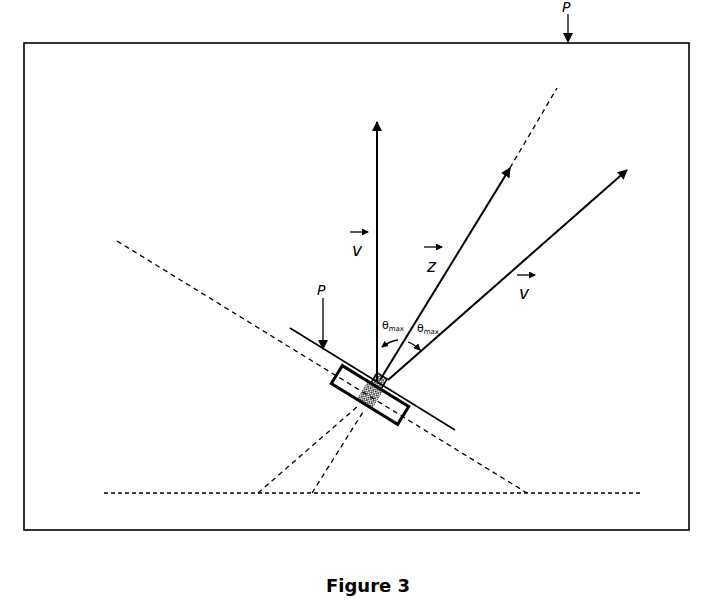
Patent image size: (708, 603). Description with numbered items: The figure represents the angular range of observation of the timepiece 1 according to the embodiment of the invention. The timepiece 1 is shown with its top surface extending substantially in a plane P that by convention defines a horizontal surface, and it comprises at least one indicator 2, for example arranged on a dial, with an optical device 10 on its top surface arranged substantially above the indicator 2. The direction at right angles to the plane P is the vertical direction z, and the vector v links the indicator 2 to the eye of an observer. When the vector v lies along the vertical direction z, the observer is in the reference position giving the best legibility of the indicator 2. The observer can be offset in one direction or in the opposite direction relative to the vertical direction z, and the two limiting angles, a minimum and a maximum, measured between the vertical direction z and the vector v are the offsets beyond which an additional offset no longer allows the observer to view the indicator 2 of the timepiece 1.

The timepiece 1 is at (336, 397).
The indicator 2 is at (368, 404).
The optical device 10 is at (375, 373).